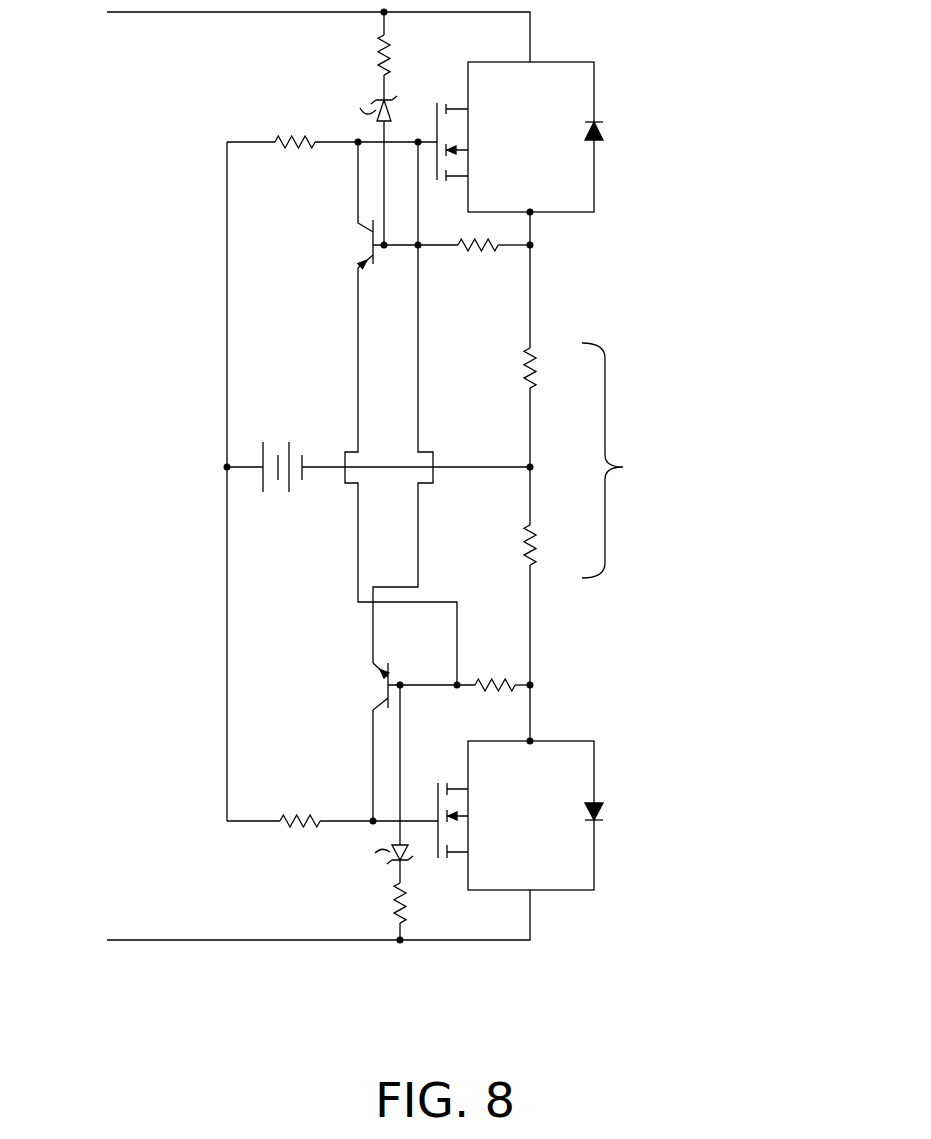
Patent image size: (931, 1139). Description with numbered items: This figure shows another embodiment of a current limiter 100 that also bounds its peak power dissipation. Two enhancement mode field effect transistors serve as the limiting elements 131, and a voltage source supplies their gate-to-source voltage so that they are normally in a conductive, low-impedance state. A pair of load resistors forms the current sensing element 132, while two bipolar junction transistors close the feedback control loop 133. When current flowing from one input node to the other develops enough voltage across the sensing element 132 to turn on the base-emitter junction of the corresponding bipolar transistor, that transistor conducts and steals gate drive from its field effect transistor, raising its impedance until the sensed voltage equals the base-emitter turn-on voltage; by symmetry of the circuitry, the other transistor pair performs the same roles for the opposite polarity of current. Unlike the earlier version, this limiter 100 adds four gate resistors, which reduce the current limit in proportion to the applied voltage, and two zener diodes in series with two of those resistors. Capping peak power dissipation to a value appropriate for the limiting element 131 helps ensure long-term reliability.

The current limiter 100 is at (718, 367).
The limiting element 131 is at (500, 46).
The current sensing element 132 is at (651, 457).
The feedback control loop 133 is at (329, 281).